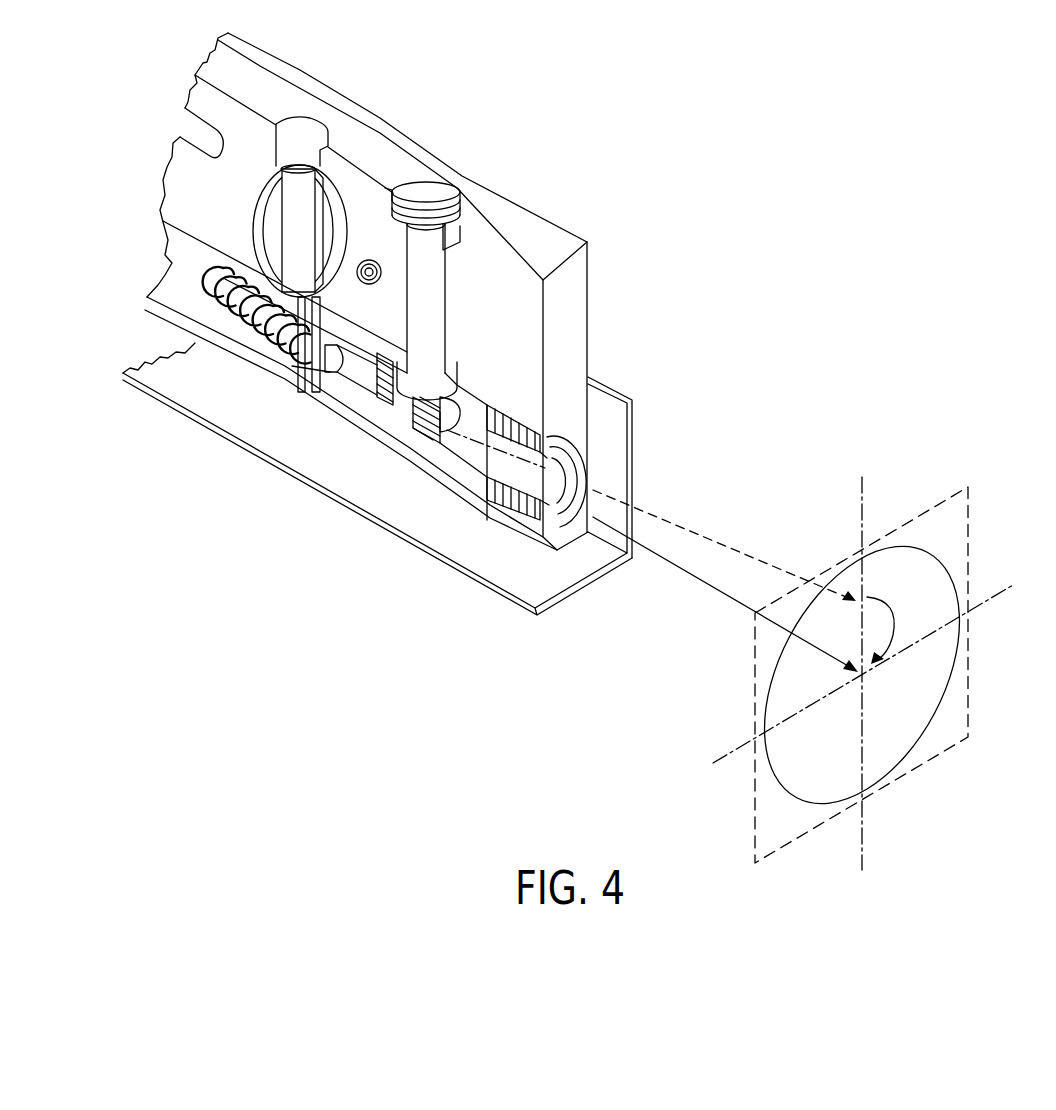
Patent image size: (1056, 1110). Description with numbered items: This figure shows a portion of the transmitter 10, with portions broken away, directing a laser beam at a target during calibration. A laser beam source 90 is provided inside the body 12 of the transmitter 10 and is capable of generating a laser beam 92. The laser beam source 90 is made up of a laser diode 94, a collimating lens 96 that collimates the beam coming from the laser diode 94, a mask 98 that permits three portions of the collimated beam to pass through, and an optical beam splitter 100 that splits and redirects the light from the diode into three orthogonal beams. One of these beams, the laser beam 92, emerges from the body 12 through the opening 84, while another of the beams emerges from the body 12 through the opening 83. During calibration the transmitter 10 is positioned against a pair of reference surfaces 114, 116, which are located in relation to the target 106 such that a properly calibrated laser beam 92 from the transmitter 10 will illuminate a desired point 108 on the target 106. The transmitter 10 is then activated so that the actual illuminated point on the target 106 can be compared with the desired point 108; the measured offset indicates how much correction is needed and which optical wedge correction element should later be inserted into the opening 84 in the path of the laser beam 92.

The transmitter 10 is at (676, 262).
The body 12 is at (573, 321).
The opening 83 is at (437, 199).
The opening 84 is at (553, 470).
The laser beam source 90 is at (275, 373).
The laser beam 92 is at (712, 541).
The laser diode 94 is at (330, 358).
The collimating lens 96 is at (388, 387).
The mask 98 is at (425, 405).
The optical beam splitter 100 is at (445, 432).
The target 106 is at (938, 757).
The desired point 108 is at (865, 677).
The reference surface 114 is at (597, 412).
The reference surface 116 is at (525, 590).